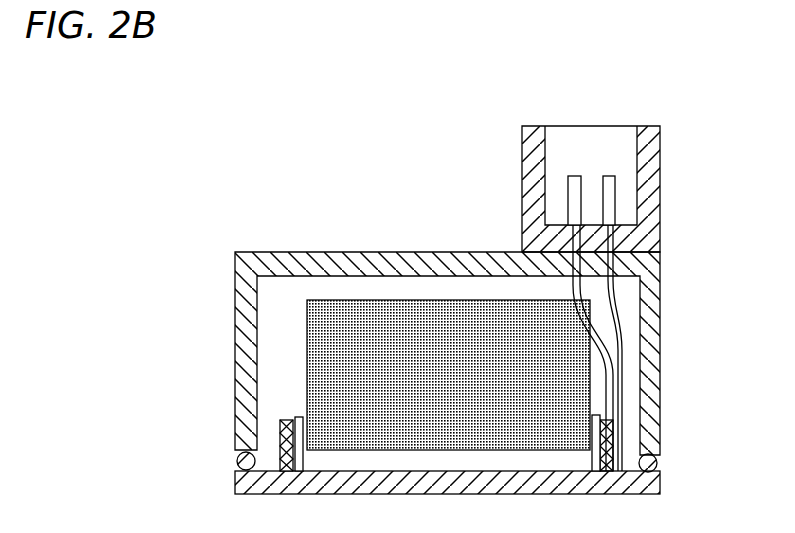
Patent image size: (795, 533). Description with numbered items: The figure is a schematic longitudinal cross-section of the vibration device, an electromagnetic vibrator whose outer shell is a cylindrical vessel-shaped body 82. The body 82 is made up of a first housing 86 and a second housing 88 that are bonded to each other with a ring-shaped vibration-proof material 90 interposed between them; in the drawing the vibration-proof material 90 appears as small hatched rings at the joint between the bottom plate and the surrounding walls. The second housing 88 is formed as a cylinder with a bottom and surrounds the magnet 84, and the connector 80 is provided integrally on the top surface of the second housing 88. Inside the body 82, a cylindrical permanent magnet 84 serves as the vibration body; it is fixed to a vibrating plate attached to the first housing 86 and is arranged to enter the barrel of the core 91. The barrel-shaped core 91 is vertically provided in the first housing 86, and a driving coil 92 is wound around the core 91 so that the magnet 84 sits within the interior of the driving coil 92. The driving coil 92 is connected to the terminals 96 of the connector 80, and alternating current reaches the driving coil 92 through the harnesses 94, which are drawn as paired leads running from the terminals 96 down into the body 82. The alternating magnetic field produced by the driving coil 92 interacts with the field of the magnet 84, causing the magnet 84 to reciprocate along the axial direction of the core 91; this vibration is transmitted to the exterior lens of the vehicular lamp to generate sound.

The connector 80 is at (522, 190).
The body 82 is at (390, 373).
The magnet 84 is at (306, 365).
The first housing 86 is at (413, 477).
The second housing 88 is at (235, 410).
The vibration-proof material 90 is at (655, 470).
The core 91 is at (604, 432).
The driving coil 92 is at (598, 452).
The harnesses 94 is at (610, 372).
The terminals 96 is at (606, 176).